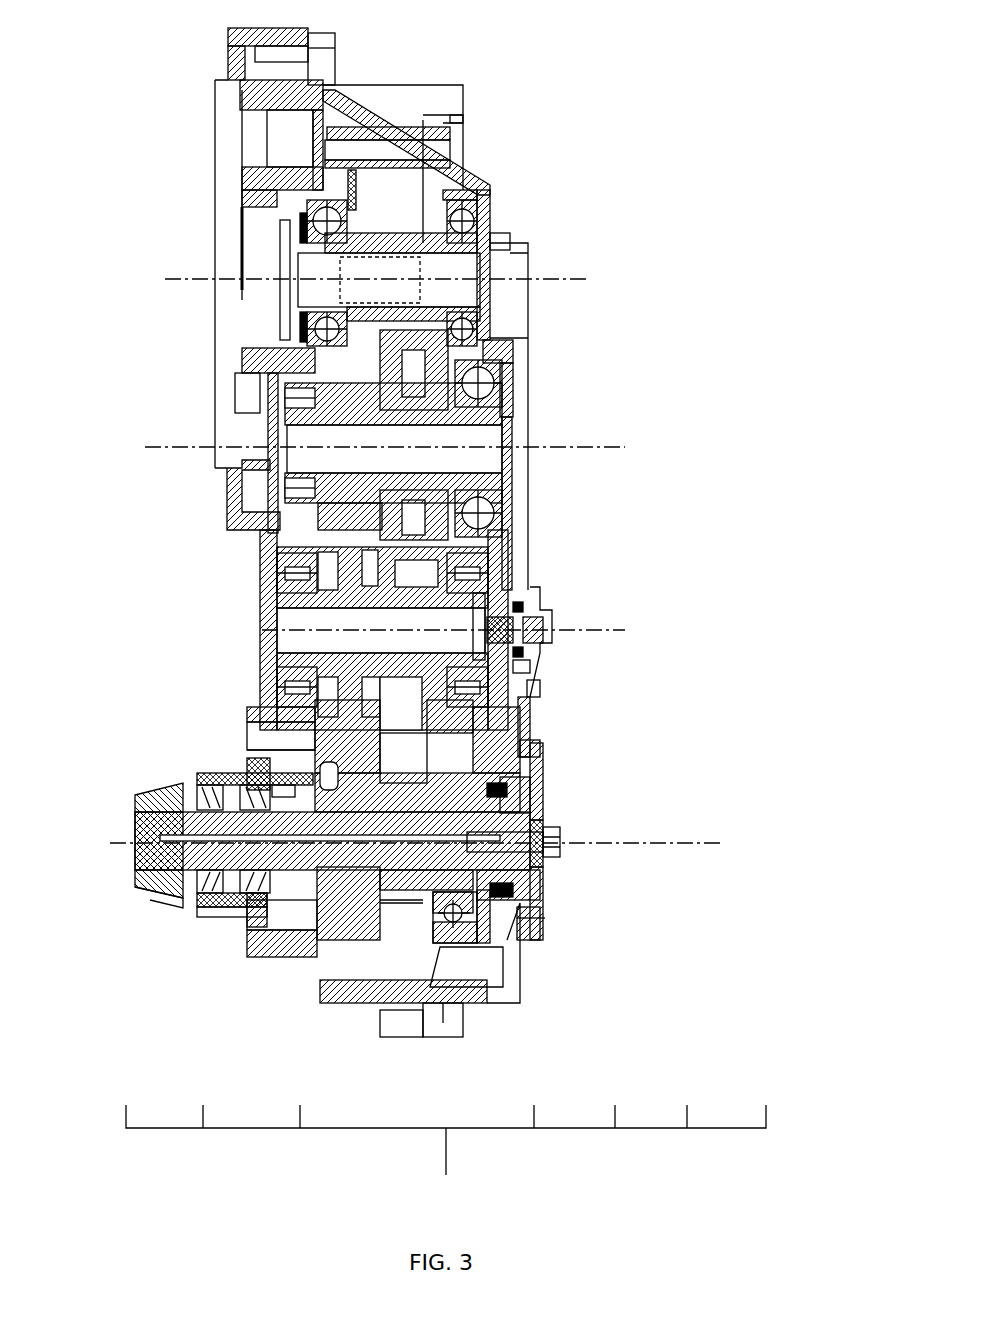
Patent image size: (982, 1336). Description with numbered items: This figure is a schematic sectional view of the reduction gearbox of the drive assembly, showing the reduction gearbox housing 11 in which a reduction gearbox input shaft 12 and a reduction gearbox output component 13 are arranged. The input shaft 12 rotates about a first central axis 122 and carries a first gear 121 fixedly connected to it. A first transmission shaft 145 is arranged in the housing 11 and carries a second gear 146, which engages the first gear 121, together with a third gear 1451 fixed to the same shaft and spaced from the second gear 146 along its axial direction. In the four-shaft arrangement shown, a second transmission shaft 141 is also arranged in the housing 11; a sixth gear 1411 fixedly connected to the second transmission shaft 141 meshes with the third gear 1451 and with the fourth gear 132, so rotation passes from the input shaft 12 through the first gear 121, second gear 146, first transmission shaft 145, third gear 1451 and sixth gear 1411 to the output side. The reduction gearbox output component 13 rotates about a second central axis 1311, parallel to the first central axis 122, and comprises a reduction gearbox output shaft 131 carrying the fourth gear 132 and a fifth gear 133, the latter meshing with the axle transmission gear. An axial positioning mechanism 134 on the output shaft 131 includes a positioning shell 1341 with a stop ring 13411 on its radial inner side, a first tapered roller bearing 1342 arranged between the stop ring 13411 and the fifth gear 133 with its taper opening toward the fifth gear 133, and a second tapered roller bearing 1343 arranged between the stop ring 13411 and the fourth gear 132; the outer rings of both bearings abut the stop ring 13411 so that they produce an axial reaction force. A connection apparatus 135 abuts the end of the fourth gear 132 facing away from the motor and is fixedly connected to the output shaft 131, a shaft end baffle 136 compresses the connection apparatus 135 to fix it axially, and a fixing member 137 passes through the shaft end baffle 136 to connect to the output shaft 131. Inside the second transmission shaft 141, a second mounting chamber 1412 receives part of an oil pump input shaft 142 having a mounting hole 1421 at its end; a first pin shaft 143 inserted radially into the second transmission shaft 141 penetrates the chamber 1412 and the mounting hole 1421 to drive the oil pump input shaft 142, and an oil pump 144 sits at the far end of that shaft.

The reduction gearbox housing 11 is at (413, 95).
The reduction gearbox input shaft 12 is at (490, 228).
The first gear 121 is at (492, 190).
The first central axis 122 is at (572, 278).
The reduction gearbox output component 13 is at (446, 1163).
The reduction gearbox output shaft 131 is at (540, 867).
The second central axis 1311 is at (703, 842).
The fourth gear 132 is at (340, 940).
The fifth gear 133 is at (183, 893).
The axial positioning mechanism 134 is at (205, 900).
The positioning shell 1341 is at (232, 780).
The stop ring 13411 is at (250, 770).
The first tapered roller bearing 1342 is at (188, 800).
The second tapered roller bearing 1343 is at (152, 820).
The connection apparatus 135 is at (535, 943).
The shaft end baffle 136 is at (540, 873).
The fixing member 137 is at (560, 842).
The second transmission shaft 141 is at (262, 615).
The sixth gear 1411 is at (262, 550).
The second mounting chamber 1412 is at (262, 630).
The oil pump input shaft 142 is at (548, 618).
The mounting hole 1421 is at (540, 690).
The first pin shaft 143 is at (515, 700).
The oil pump 144 is at (540, 658).
The first transmission shaft 145 is at (518, 413).
The third gear 1451 is at (258, 385).
The second gear 146 is at (508, 360).